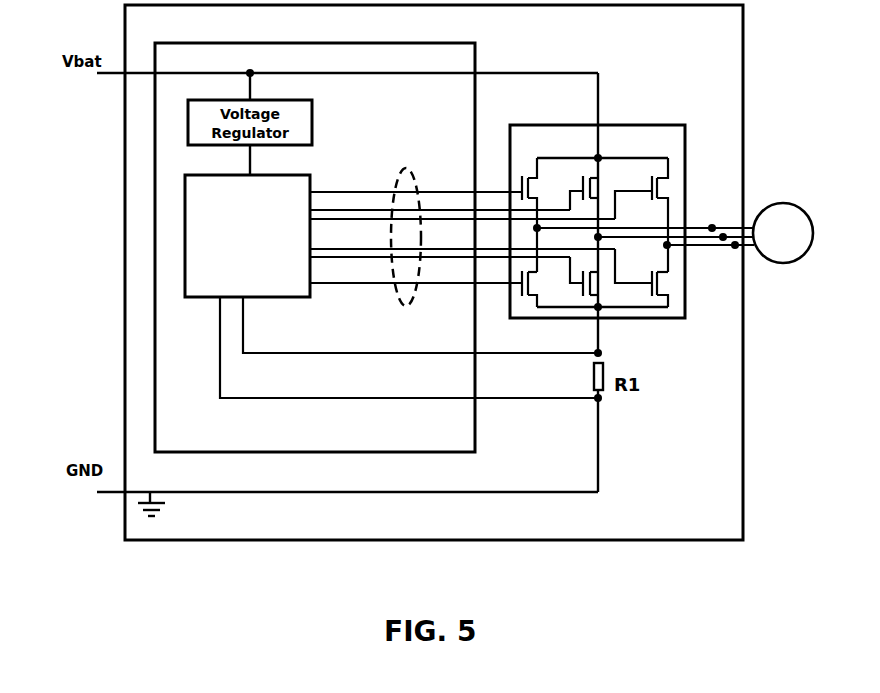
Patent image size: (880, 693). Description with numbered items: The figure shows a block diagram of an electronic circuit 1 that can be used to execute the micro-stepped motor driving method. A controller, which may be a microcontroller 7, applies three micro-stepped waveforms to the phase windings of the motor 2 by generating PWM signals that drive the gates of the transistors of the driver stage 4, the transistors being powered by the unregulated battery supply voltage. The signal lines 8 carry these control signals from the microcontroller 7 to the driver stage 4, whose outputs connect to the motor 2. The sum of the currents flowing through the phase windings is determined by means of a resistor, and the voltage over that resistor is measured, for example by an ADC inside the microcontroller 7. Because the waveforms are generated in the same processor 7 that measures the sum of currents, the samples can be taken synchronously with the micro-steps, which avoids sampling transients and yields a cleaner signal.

The electronic circuit 1 is at (156, 621).
The motor 2 is at (783, 207).
The driver stage 4 is at (620, 127).
The microcontroller 7 is at (305, 174).
The control signal lines bundle 8 is at (412, 166).